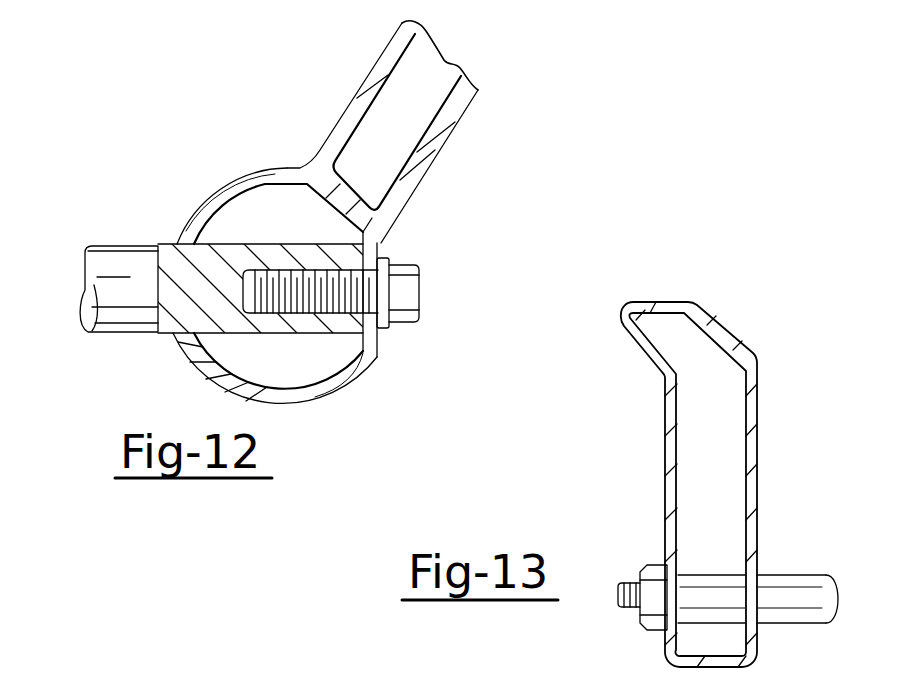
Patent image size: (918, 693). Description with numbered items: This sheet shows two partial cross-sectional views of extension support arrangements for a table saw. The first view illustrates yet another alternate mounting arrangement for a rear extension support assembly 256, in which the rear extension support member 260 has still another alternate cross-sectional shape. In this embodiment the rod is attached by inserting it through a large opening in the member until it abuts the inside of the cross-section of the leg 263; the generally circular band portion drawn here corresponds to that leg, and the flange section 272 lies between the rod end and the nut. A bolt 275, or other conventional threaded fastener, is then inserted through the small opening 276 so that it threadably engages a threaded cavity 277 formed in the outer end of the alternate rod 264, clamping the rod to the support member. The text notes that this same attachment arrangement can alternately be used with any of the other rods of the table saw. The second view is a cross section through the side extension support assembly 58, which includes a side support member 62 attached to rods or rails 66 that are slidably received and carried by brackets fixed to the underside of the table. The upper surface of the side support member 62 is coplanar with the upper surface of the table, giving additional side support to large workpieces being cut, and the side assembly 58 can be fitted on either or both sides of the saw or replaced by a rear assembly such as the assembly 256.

In FIG. 12, the rear extension support assembly 256 is at (355, 68).
In FIG. 12, the rear extension support member 260 is at (422, 177).
In FIG. 12, the leg 263 is at (327, 392).
In FIG. 12, the clamp flange body 272 is at (176, 334).
In FIG. 12, the small opening 276 is at (382, 235).
In FIG. 12, the alternate rod 264 is at (103, 333).
In FIG. 12, the threaded cavity 277 is at (233, 333).
In FIG. 12, the bolt 275 is at (406, 291).
In FIG. 13, the side extension support assembly 58 is at (620, 421).
In FIG. 13, the side support member 62 is at (768, 455).
In FIG. 13, the rods or rails 66 is at (790, 594).